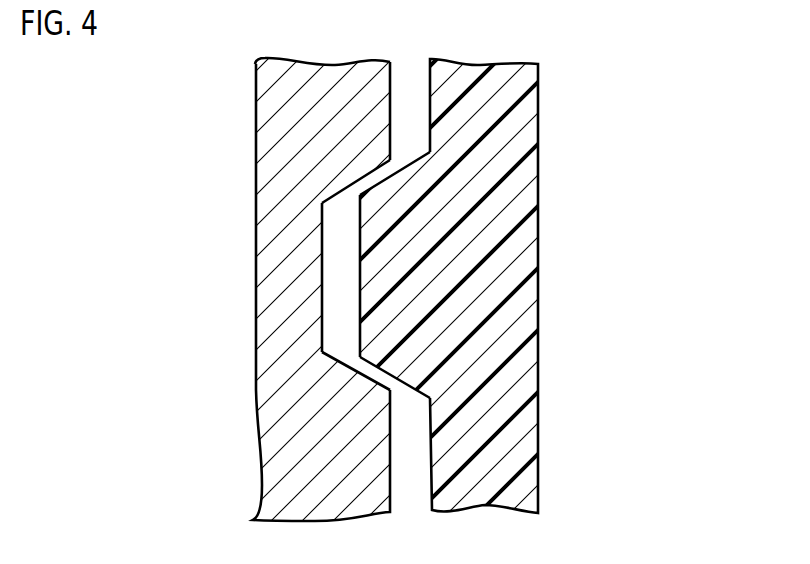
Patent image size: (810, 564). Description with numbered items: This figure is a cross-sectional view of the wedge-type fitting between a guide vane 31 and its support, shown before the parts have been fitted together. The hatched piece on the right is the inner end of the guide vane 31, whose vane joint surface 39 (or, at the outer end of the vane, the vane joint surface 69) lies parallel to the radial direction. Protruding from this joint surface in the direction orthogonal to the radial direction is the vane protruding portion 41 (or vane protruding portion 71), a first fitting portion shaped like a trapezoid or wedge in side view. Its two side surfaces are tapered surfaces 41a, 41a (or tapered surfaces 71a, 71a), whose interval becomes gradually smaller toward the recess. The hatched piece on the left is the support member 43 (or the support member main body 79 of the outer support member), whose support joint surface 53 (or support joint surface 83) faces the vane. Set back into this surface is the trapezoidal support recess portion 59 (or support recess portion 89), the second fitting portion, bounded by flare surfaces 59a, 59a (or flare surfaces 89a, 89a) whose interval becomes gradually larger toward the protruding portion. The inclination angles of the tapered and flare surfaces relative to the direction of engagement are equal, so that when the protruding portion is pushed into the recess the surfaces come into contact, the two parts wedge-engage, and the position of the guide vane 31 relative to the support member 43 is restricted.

The guide vane 31 is at (405, 275).
The support member 43 is at (405, 275).
The support member main body 79 is at (405, 275).
The support joint surface 53 is at (362, 90).
The support joint surface 83 is at (392, 87).
The support recess portion 59 is at (238, 280).
The support recess portion 89 is at (323, 270).
The flare surfaces 59a is at (253, 309).
The flare surfaces 89a is at (344, 200).
The vane joint surface 39 is at (405, 275).
The vane joint surface 69 is at (405, 275).
The vane protruding portion 41 is at (492, 276).
The vane protruding portion 71 is at (360, 247).
The tapered surfaces 41a is at (507, 272).
The tapered surfaces 71a is at (406, 168).